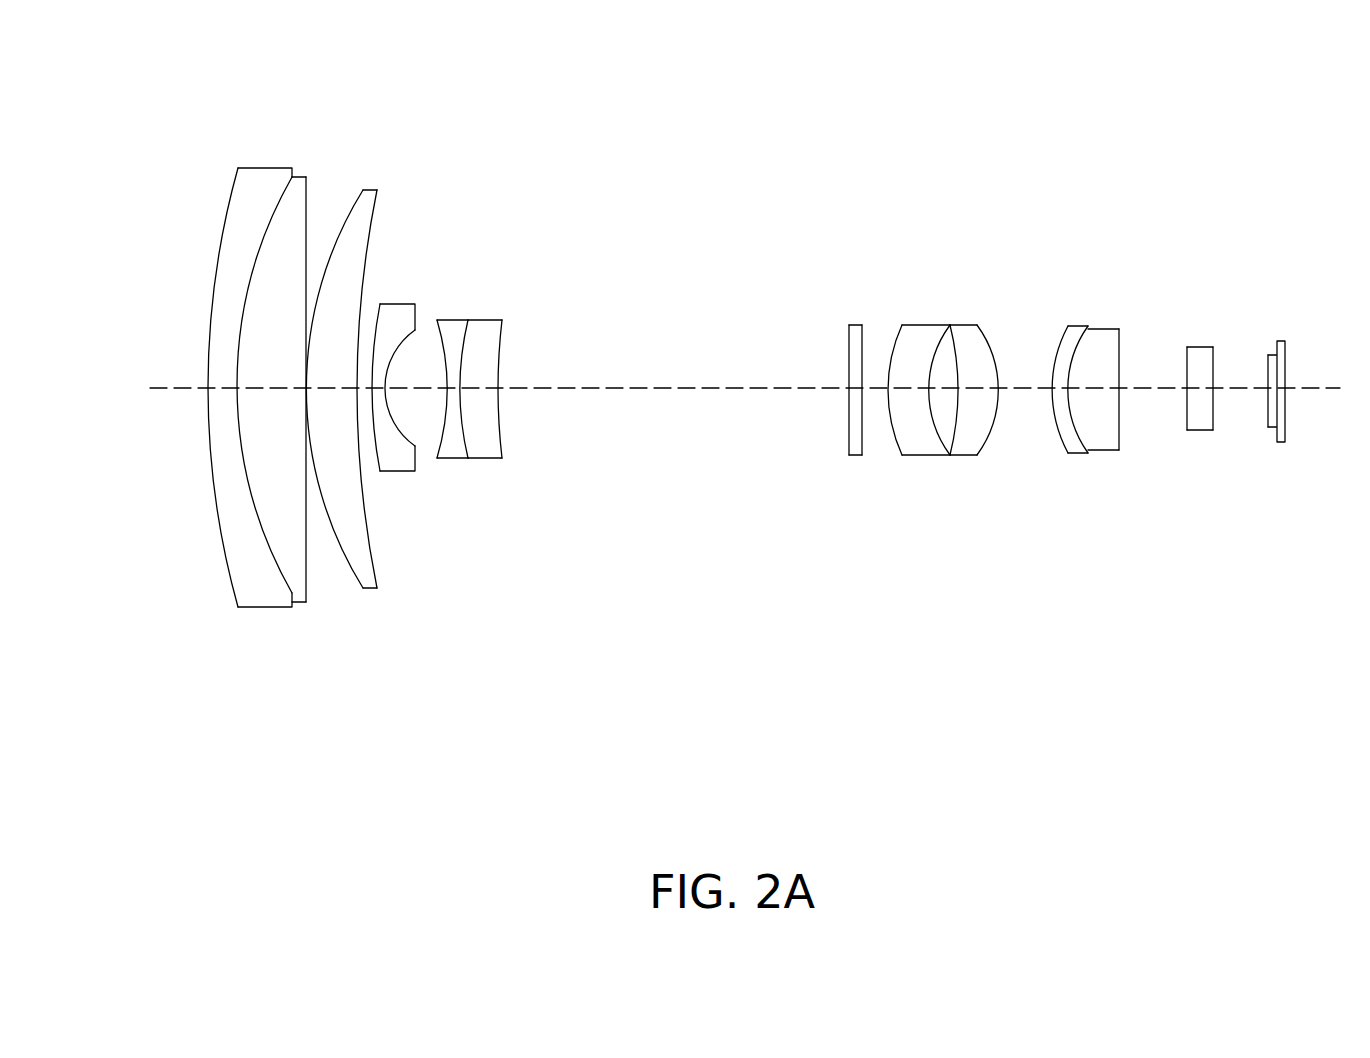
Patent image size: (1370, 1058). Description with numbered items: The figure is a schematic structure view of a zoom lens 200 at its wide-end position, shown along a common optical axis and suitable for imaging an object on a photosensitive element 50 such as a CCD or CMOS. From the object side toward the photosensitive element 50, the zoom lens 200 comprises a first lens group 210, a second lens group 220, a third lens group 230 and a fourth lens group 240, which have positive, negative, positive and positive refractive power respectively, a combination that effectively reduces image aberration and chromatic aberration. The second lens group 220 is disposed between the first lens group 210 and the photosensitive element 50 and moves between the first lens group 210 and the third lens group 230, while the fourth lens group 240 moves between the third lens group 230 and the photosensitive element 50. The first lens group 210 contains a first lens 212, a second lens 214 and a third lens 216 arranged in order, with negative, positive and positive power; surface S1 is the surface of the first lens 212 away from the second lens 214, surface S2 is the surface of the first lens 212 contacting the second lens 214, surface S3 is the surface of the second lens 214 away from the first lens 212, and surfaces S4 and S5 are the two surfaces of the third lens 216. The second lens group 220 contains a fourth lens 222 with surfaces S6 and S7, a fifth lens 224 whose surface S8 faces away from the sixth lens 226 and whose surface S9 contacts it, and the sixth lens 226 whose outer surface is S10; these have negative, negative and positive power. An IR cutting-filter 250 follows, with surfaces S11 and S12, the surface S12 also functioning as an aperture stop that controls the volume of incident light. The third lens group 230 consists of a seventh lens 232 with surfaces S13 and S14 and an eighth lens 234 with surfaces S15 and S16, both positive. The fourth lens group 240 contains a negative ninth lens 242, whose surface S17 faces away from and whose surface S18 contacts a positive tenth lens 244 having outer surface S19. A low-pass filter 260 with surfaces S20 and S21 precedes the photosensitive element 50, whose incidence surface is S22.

The zoom lens 200 is at (218, 750).
The first lens group 210 is at (358, 687).
The first lens 212 is at (258, 595).
The second lens 214 is at (303, 603).
The third lens 216 is at (362, 570).
The second lens group 220 is at (532, 687).
The fourth lens 222 is at (400, 463).
The fifth lens 224 is at (456, 452).
The sixth lens 226 is at (490, 447).
The third lens group 230 is at (1007, 635).
The seventh lens 232 is at (920, 440).
The eighth lens 234 is at (965, 440).
The fourth lens group 240 is at (1155, 635).
The ninth lens 242 is at (1076, 438).
The tenth lens 244 is at (1108, 440).
The IR cutting-filter 250 is at (858, 430).
The low-pass filter 260 is at (1203, 425).
The photosensitive element 50 is at (1267, 433).
The surface S1 is at (203, 302).
The surface S2 is at (248, 255).
The surface S3 is at (308, 207).
The surface S4 is at (332, 217).
The surface S5 is at (382, 206).
The surface S6 is at (369, 312).
The surface S7 is at (435, 369).
The surface S8 is at (408, 346).
The surface S9 is at (460, 334).
The surface S10 is at (509, 336).
The surface S11 is at (838, 354).
The surface S12 is at (864, 343).
The surface S13 is at (898, 346).
The surface S14 is at (928, 342).
The surface S15 is at (960, 336).
The surface S16 is at (989, 333).
The surface S17 is at (1046, 354).
The surface S18 is at (1086, 344).
The surface S19 is at (1126, 349).
The surface S20 is at (1178, 409).
The surface S21 is at (1215, 360).
The surface S22 is at (1259, 370).